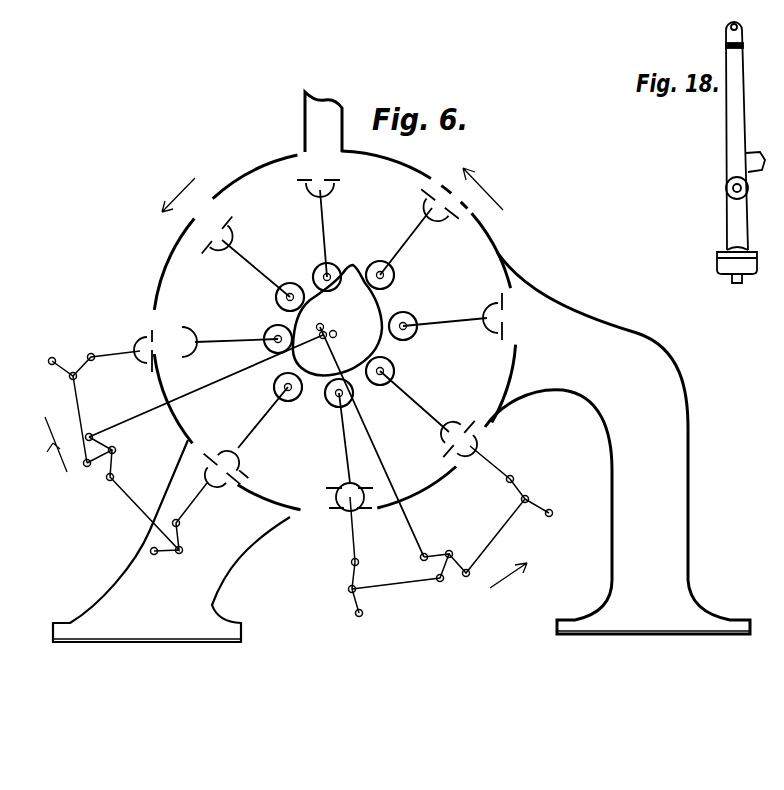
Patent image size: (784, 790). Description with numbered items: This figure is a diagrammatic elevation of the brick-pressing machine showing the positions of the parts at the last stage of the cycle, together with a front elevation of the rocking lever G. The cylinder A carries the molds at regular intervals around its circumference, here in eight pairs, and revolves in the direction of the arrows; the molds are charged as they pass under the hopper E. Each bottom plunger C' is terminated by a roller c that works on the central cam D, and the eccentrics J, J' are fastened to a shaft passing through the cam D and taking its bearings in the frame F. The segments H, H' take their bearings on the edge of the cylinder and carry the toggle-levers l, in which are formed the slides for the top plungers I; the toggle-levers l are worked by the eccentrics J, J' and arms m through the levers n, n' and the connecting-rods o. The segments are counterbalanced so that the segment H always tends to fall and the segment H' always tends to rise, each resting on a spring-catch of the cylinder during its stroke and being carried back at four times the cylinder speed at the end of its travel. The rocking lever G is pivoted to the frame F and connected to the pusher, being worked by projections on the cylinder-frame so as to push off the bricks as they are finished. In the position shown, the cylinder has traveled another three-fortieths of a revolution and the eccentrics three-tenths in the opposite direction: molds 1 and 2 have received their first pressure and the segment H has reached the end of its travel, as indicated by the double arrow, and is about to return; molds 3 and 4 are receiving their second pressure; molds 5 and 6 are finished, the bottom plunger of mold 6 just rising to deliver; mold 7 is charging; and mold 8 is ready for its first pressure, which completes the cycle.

In FIG. 6, the cylinder A is at (334, 330).
In FIG. 6, the hopper E is at (323, 122).
In FIG. 6, the frame F is at (401, 447).
In FIG. 18, the rocking lever G is at (744, 152).
In FIG. 6, the central cam D is at (337, 320).
In FIG. 6, the eccentric J is at (311, 350).
In FIG. 6, the eccentric J' is at (346, 327).
In FIG. 6, the roller c is at (279, 298).
In FIG. 6, the bottom plunger C' is at (341, 336).
In FIG. 6, the top plunger I is at (143, 344).
In FIG. 6, the arm m is at (256, 442).
In FIG. 6, the segment H is at (140, 463).
In FIG. 6, the segment H' is at (449, 529).
In FIG. 6, the toggle-lever l is at (552, 498).
In FIG. 6, the lever n is at (273, 490).
In FIG. 6, the lever n' is at (274, 533).
In FIG. 6, the connecting-rod o is at (296, 498).
In FIG. 6, the mold 1 is at (174, 349).
In FIG. 6, the mold 2 is at (229, 461).
In FIG. 6, the mold 3 is at (349, 497).
In FIG. 6, the mold 4 is at (451, 432).
In FIG. 6, the mold 5 is at (498, 316).
In FIG. 6, the mold 6 is at (434, 211).
In FIG. 6, the mold 7 is at (318, 178).
In FIG. 6, the mold 8 is at (222, 239).